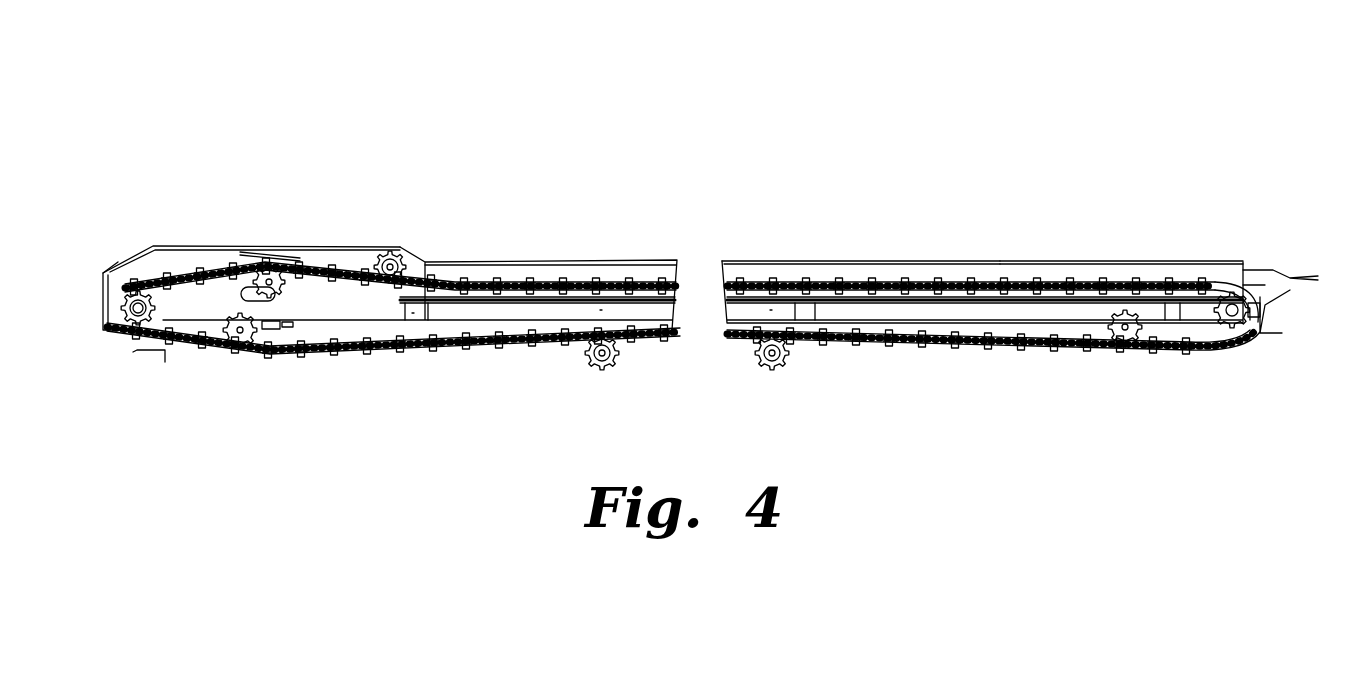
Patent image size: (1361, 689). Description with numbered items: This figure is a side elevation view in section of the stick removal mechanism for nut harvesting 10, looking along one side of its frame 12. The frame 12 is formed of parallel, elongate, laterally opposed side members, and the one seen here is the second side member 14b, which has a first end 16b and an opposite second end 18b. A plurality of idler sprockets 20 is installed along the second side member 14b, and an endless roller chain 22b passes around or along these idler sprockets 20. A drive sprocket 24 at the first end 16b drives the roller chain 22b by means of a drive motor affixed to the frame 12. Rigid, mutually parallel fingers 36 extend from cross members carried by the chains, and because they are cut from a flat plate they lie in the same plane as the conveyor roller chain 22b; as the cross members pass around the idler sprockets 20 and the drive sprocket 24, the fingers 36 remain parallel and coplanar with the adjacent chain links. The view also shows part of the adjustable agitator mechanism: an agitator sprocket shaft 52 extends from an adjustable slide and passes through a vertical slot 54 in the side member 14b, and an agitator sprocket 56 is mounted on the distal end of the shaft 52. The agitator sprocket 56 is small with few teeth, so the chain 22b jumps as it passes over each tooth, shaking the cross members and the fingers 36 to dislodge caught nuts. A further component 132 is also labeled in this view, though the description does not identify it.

The stick removal mechanism for nut harvesting 10 is at (700, 238).
The frame 12 is at (645, 250).
The second side member 14b is at (771, 261).
The first end 16b is at (1200, 261).
The second end 18b is at (183, 246).
The idler sprocket 20 is at (152, 258).
The endless roller chain 22b is at (990, 278).
The drive sprocket 24 is at (1221, 330).
The finger 36 is at (107, 330).
The agitator sprocket shaft 52 is at (246, 266).
The vertical slot 54 is at (283, 315).
The agitator sprocket 56 is at (275, 312).
The guide bar 132 is at (283, 262).